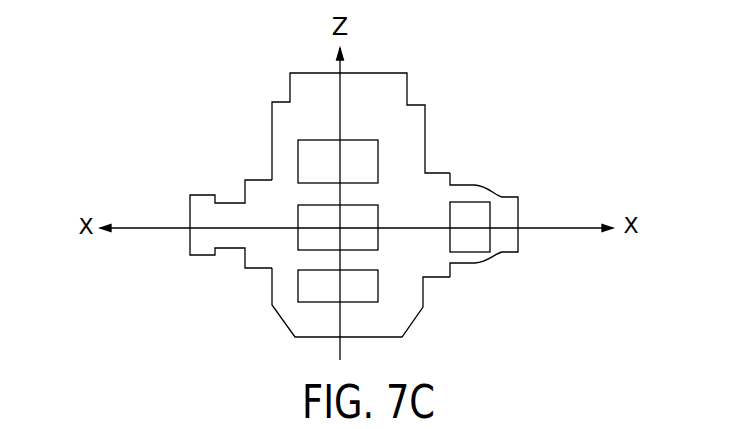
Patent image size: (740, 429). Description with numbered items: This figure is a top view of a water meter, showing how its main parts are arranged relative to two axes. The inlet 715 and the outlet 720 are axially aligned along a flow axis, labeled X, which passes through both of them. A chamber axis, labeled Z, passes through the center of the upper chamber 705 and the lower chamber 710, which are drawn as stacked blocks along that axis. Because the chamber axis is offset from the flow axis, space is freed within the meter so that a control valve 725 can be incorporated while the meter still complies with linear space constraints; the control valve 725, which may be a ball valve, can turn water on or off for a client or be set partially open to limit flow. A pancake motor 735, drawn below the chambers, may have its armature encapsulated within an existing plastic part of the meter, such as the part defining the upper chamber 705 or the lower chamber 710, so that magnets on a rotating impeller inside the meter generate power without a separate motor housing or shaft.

The upper chamber 705 is at (383, 152).
The lower chamber 710 is at (378, 233).
The inlet 715 is at (502, 196).
The outlet 720 is at (224, 203).
The control valve 725 is at (507, 234).
The pancake motor 735 is at (302, 293).